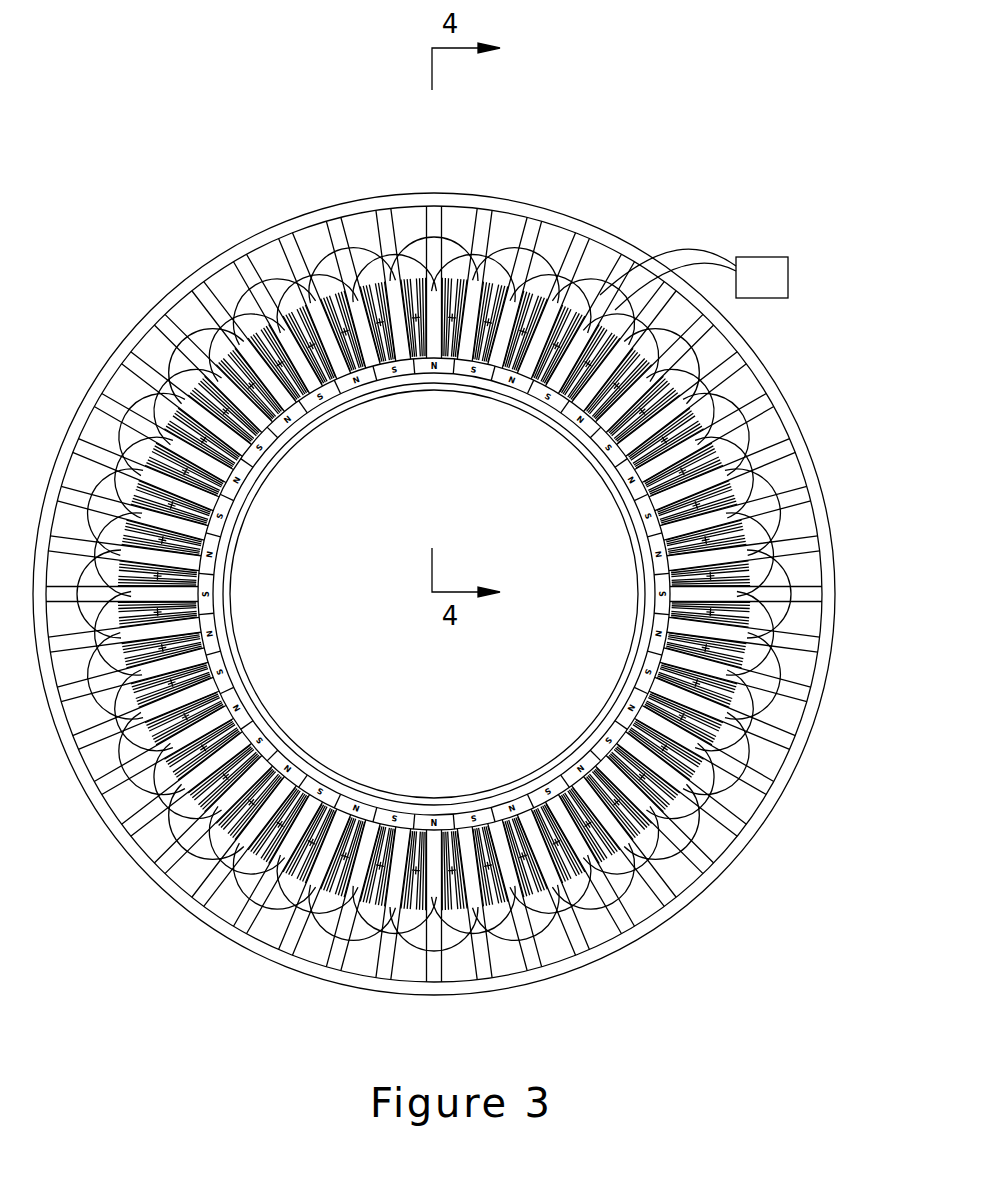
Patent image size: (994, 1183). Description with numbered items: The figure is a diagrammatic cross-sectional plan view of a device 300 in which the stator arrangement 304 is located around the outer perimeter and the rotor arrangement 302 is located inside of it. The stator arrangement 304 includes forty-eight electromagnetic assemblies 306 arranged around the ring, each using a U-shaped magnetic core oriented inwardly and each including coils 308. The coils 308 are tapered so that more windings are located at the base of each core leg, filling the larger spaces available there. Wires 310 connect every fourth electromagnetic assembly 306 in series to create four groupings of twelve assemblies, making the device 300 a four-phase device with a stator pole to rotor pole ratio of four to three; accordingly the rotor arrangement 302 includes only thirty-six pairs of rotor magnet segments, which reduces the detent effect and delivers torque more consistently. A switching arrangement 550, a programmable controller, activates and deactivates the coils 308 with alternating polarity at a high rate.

The device 300 is at (455, 549).
The rotor arrangement 302 is at (552, 242).
The stator arrangement 304 is at (335, 405).
The electromagnetic assembly 306 is at (435, 288).
The coils 308 is at (670, 458).
The wires 310 is at (312, 260).
The switching arrangement 550 is at (765, 257).